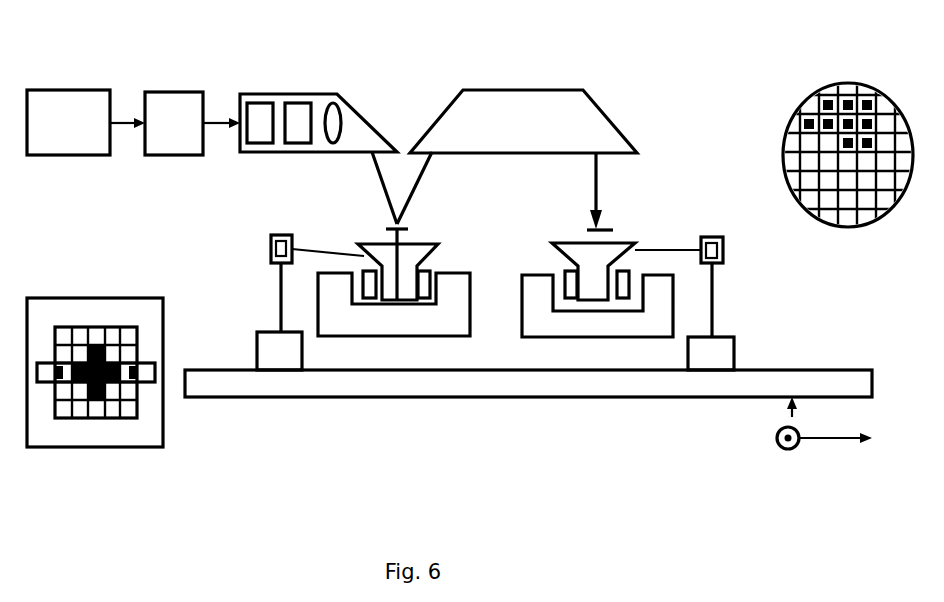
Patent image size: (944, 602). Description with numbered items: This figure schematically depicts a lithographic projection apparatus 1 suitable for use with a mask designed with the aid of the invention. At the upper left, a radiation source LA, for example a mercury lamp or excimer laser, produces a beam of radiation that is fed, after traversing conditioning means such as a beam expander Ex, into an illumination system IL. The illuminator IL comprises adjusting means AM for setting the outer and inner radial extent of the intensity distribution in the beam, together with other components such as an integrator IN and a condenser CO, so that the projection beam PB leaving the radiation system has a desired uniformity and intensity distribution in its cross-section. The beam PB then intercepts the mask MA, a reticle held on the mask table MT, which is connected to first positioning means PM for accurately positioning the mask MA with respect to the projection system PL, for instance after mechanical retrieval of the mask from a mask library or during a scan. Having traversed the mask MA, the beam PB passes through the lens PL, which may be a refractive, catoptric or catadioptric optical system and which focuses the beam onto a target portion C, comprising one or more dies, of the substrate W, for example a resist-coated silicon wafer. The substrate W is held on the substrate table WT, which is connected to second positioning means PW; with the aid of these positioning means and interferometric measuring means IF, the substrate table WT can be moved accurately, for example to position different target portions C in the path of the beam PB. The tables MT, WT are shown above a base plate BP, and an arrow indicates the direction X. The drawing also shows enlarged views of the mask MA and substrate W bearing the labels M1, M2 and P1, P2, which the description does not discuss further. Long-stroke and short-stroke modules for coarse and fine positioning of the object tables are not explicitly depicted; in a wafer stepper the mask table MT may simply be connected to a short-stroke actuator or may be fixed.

The radiation source LA is at (68, 122).
The beam expander Ex is at (174, 123).
The illumination system (illuminator) IL is at (243, 94).
The adjusting means AM is at (265, 94).
The integrator IN is at (300, 94).
The condenser CO is at (332, 94).
The lithographic projection apparatus 1 is at (410, 82).
The projection beam PB is at (378, 166).
The projection system (lens) PL is at (523, 160).
The mask table MT is at (397, 300).
The first positioning means PM is at (442, 336).
The substrate table WT is at (597, 300).
The second positioning means PW is at (648, 337).
The base plate BP is at (528, 383).
The X coordinate axis X is at (834, 438).
The interferometric measuring means IF is at (276, 235).
The substrate W is at (760, 144).
The substrate alignment mark P1 is at (808, 212).
The substrate alignment mark P2 is at (882, 214).
The mask MA is at (370, 266).
The target portion C is at (78, 400).
The mask alignment mark M1 is at (50, 384).
The mask alignment mark M2 is at (143, 384).